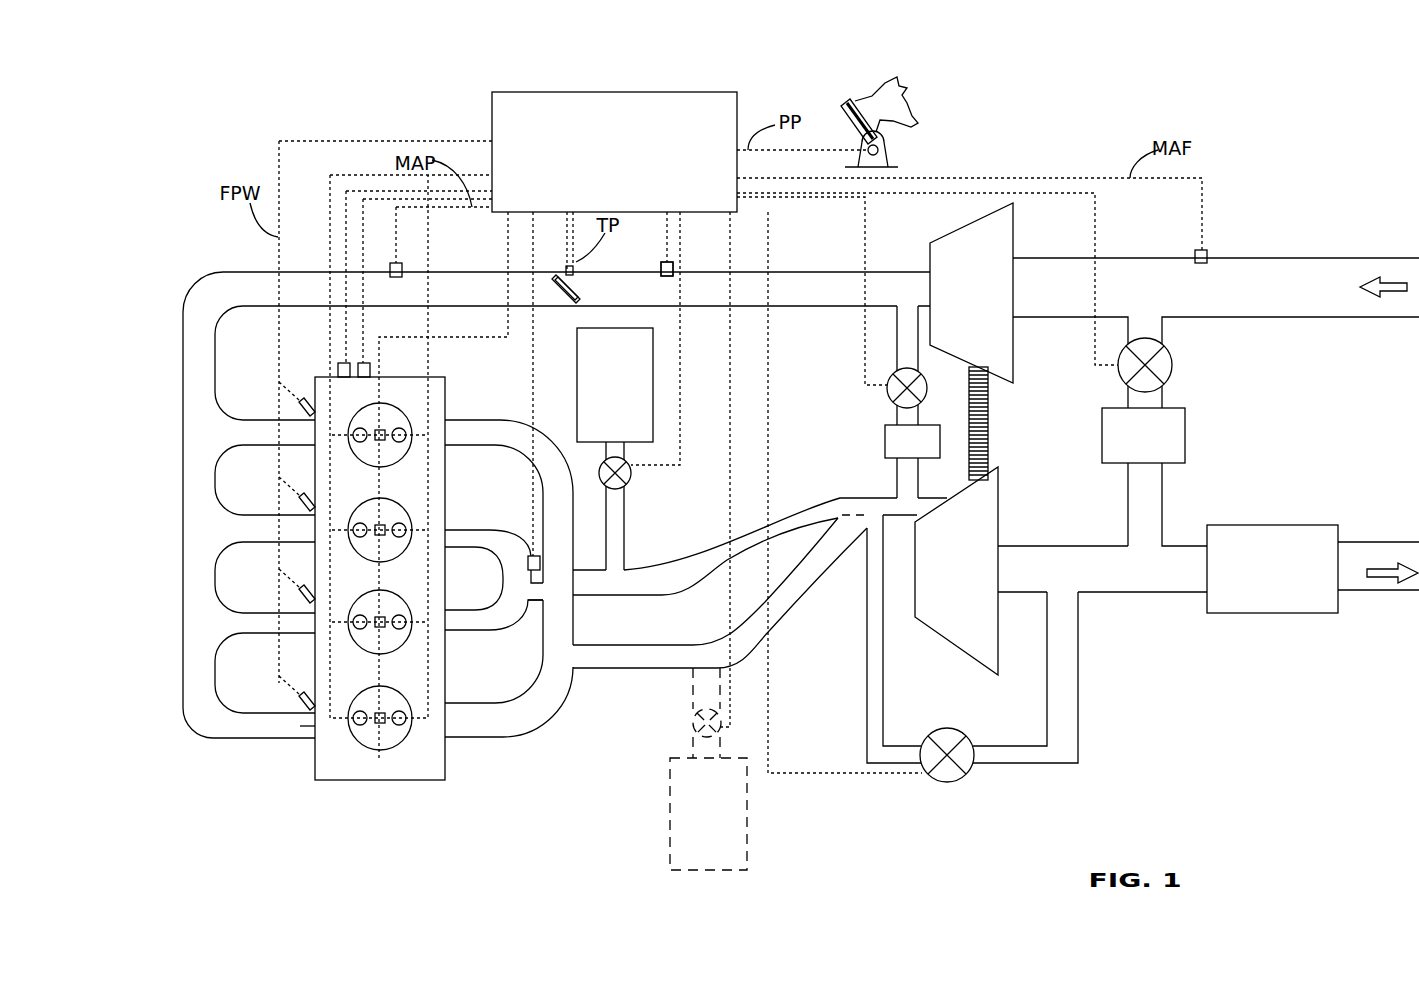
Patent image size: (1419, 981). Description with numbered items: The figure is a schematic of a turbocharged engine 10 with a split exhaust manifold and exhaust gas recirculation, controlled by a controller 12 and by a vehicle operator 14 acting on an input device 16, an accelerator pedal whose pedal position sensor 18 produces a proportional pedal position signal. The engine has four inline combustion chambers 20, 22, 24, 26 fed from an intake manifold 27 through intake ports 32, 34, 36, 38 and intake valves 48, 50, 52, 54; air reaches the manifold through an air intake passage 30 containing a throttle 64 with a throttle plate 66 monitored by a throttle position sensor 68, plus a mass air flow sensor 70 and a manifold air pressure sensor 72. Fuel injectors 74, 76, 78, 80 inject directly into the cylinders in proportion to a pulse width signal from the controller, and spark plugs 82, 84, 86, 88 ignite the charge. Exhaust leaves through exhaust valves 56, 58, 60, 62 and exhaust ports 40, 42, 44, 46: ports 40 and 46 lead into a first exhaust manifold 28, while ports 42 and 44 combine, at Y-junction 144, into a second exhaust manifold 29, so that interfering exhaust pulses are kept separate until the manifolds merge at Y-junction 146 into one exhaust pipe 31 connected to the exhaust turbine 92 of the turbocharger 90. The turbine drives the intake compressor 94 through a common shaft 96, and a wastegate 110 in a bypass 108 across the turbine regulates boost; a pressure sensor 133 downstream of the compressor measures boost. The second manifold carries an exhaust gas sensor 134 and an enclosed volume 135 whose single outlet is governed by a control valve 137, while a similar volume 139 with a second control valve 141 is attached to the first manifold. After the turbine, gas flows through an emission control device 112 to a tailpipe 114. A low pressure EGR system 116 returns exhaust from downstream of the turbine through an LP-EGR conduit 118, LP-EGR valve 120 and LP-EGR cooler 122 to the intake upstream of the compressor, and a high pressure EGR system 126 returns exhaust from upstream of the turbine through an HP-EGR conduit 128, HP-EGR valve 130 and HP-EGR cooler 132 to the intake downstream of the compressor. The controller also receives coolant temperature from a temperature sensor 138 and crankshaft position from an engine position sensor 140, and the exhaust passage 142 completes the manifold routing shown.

The engine 10 is at (155, 352).
The controller 12 is at (614, 152).
The vehicle operator 14 is at (890, 112).
The input device 16 is at (850, 128).
The pedal position sensor 18 is at (940, 136).
The combustion chamber 20 is at (397, 458).
The combustion chamber 22 is at (395, 554).
The combustion chamber 24 is at (395, 646).
The combustion chamber 26 is at (395, 744).
The intake manifold 27 is at (232, 280).
The first exhaust manifold 28 is at (643, 646).
The second exhaust manifold 29 is at (680, 590).
The air intake passage 30 is at (1370, 296).
The exhaust pipe 31 is at (920, 507).
The intake port 32 is at (283, 433).
The intake port 34 is at (277, 528).
The intake port 36 is at (277, 617).
The intake port 38 is at (300, 726).
The exhaust port 40 is at (447, 447).
The exhaust port 42 is at (455, 505).
The exhaust port 44 is at (447, 631).
The exhaust port 46 is at (447, 737).
The intake valve 48 is at (356, 428).
The intake valve 50 is at (356, 523).
The intake valve 52 is at (356, 618).
The intake valve 54 is at (356, 713).
The exhaust valve 56 is at (403, 428).
The exhaust valve 58 is at (403, 523).
The exhaust valve 60 is at (403, 618).
The exhaust valve 62 is at (403, 713).
The throttle 64 is at (560, 300).
The throttle plate 66 is at (580, 296).
The throttle position sensor 68 is at (578, 280).
The mass air flow sensor 70 is at (1208, 256).
The manifold air pressure sensor 72 is at (402, 265).
The fuel injector 74 is at (310, 405).
The fuel injector 76 is at (305, 503).
The fuel injector 78 is at (305, 598).
The fuel injector 80 is at (307, 700).
The spark plug 82 is at (378, 440).
The spark plug 84 is at (378, 535).
The spark plug 86 is at (378, 627).
The spark plug 88 is at (378, 723).
The turbocharger 90 is at (1014, 437).
The exhaust turbine 92 is at (956, 571).
The intake compressor 94 is at (971, 293).
The common shaft 96 is at (968, 402).
The bypass 108 is at (868, 660).
The wastegate 110 is at (950, 782).
The emission control device 112 is at (1272, 569).
The tailpipe 114 is at (1378, 566).
The low pressure EGR system 116 is at (1272, 430).
The LP-EGR conduit 118 is at (1162, 520).
The LP-EGR valve 120 is at (1172, 372).
The LP-EGR cooler 122 is at (1143, 424).
The high pressure EGR system 126 is at (846, 433).
The HP-EGR conduit 128 is at (897, 490).
The HP-EGR valve 130 is at (888, 397).
The HP-EGR cooler 132 is at (912, 431).
The pressure sensor 133 is at (675, 268).
The exhaust gas sensor 134 is at (530, 557).
The volume 135 is at (615, 394).
The control valve 137 is at (632, 478).
The temperature sensor 138 is at (371, 373).
The volume 139 is at (708, 814).
The engine position sensor 140 is at (340, 365).
The second control valve 141 is at (692, 720).
The exhaust passage 142 is at (574, 668).
The Y-junction 144 is at (528, 600).
The Y-junction 146 is at (842, 515).